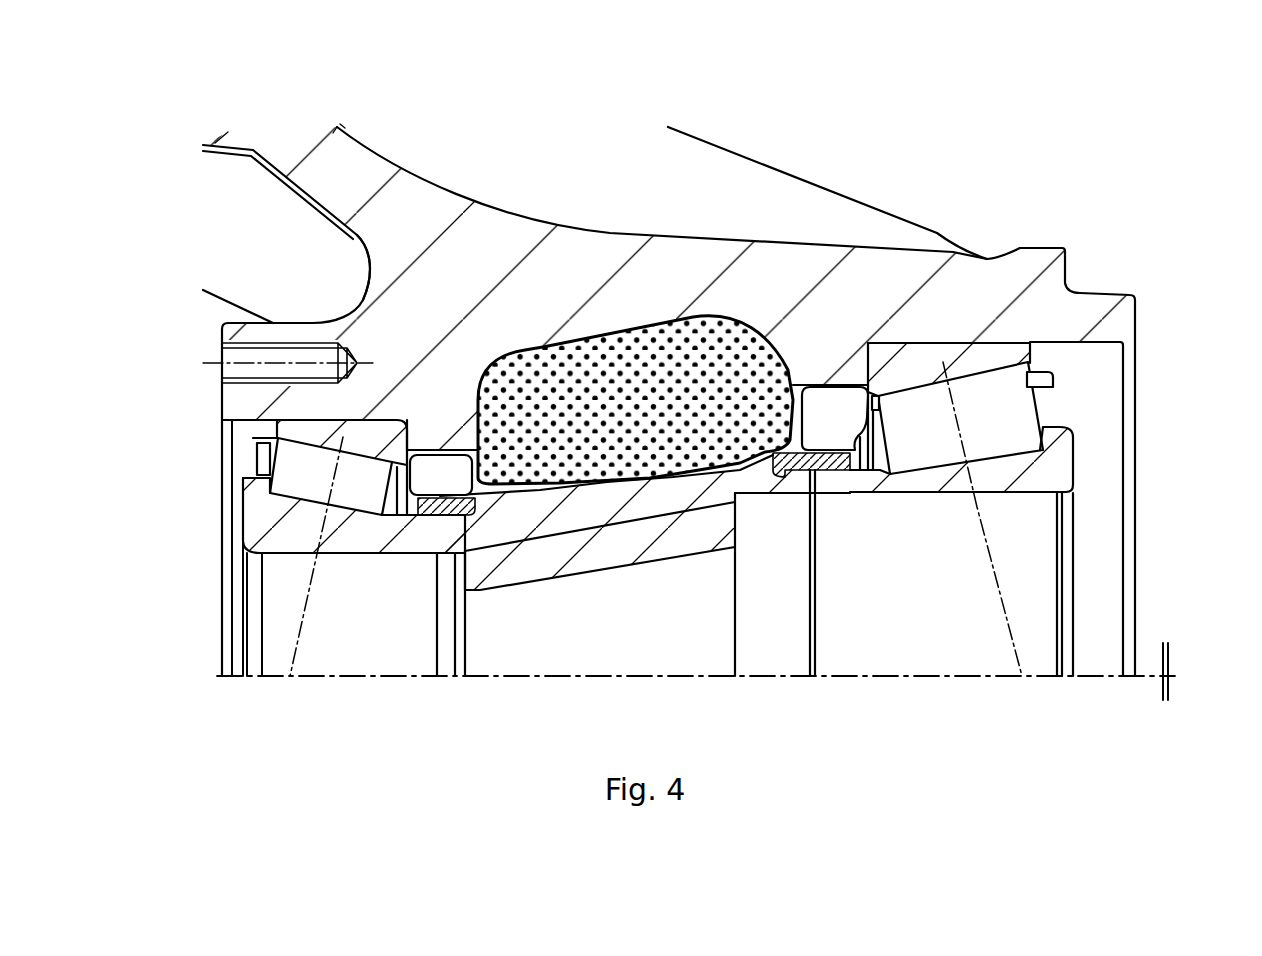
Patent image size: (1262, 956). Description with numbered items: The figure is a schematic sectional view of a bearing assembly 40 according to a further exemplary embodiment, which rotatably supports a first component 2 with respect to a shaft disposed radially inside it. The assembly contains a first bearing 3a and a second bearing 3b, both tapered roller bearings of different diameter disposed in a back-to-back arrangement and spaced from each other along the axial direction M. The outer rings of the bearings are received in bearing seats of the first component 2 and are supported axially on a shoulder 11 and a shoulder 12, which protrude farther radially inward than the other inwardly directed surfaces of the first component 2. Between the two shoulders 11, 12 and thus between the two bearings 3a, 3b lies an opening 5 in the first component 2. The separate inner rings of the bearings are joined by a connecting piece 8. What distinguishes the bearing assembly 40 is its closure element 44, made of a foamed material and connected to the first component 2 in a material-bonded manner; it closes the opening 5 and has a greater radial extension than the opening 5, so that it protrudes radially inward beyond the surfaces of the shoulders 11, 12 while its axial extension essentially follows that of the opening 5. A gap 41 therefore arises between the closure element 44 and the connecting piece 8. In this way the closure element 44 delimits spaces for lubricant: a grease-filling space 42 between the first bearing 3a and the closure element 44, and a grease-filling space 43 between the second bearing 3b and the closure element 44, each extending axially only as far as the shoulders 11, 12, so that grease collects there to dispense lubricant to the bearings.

The first component 2 is at (827, 373).
The first bearing 3a is at (992, 357).
The second bearing 3b is at (295, 526).
The opening 5 is at (740, 323).
The connecting piece 8 is at (681, 490).
The shoulder 11 is at (884, 283).
The shoulder 12 is at (447, 432).
The bearing assembly 40 is at (1027, 190).
The gap 41 is at (606, 487).
The grease-filling space 42 is at (829, 417).
The grease-filling space 43 is at (432, 478).
The closure element 44 is at (712, 368).
The axial direction M is at (1177, 673).